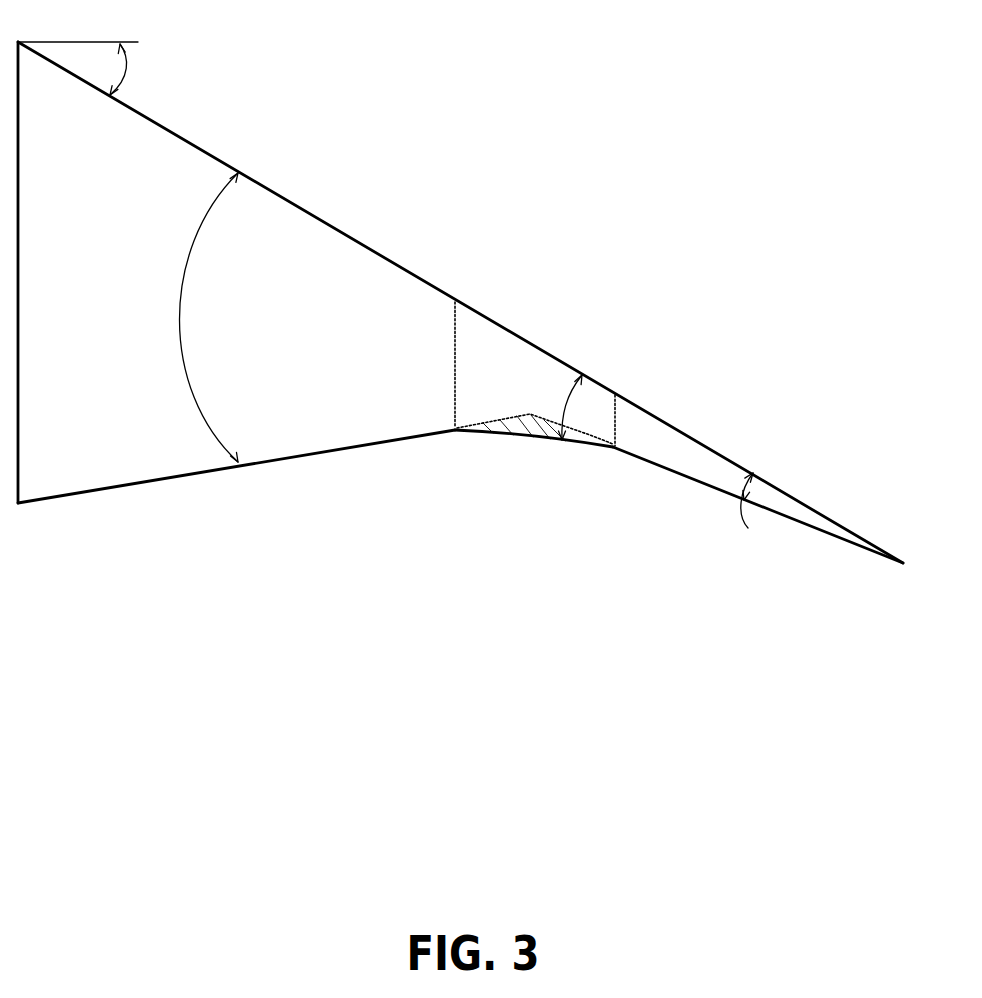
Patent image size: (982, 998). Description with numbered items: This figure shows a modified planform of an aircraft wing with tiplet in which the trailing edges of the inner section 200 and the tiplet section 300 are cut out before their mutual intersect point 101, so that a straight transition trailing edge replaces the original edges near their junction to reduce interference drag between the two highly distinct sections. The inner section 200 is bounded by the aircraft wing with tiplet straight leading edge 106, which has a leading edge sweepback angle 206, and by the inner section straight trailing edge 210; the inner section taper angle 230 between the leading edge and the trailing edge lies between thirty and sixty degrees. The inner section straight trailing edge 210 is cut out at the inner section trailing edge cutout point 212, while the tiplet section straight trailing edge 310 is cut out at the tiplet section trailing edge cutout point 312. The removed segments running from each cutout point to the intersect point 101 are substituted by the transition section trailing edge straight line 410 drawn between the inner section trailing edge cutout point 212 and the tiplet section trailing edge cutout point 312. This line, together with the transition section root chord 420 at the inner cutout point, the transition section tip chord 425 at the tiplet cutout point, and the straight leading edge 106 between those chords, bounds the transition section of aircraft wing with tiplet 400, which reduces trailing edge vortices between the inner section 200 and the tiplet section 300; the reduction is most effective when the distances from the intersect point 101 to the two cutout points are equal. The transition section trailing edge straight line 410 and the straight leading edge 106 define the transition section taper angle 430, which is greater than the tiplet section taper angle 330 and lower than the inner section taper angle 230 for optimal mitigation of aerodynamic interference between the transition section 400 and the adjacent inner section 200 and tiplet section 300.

The intersect point 101 is at (537, 414).
The aircraft wing with tiplet straight leading edge 106 is at (312, 213).
The inner section 200 is at (200, 167).
The leading edge sweepback angle 206 is at (123, 70).
The inner section straight trailing edge 210 is at (200, 470).
The inner section trailing edge cutout point 212 is at (453, 432).
The inner section taper angle 230 is at (180, 300).
The tiplet section 300 is at (722, 473).
The tiplet section straight trailing edge 310 is at (702, 483).
The tiplet section trailing edge cutout point 312 is at (614, 448).
The tiplet section taper angle 330 is at (750, 482).
The transition section of aircraft wing with tiplet 400 is at (485, 347).
The transition section trailing edge straight line 410 is at (516, 437).
The transition section root chord 420 is at (453, 372).
The transition section tip chord 425 is at (616, 418).
The transition section taper angle 430 is at (581, 372).